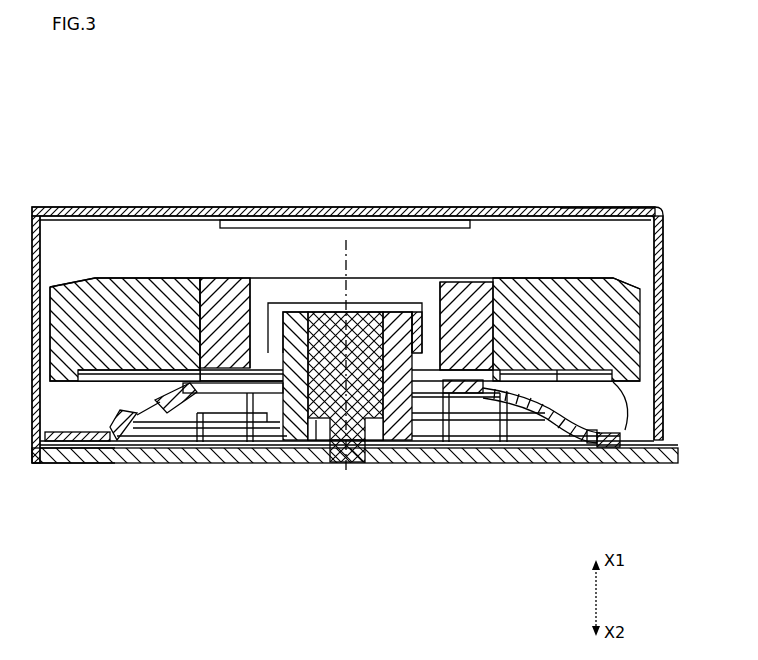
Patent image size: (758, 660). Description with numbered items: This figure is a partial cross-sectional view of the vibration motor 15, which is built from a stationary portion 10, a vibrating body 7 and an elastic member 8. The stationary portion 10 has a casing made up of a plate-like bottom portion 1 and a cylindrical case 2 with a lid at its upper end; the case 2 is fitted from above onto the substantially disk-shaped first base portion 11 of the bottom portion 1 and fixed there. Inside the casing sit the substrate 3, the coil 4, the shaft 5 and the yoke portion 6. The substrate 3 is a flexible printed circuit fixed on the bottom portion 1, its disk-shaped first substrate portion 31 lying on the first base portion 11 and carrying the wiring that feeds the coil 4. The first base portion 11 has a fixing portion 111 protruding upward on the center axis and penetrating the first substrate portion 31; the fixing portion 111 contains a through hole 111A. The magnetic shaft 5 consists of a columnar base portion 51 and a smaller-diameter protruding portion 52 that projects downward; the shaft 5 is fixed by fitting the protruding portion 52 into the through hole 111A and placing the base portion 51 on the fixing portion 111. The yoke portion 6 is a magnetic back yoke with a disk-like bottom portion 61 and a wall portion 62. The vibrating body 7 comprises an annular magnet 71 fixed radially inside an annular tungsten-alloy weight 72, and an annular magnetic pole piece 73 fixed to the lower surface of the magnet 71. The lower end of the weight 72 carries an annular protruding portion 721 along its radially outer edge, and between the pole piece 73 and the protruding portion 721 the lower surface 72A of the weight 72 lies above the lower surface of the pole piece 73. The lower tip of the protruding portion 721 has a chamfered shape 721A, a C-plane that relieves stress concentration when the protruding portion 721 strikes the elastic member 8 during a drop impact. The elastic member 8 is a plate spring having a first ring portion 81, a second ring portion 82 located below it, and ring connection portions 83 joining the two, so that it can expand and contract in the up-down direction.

The bottom portion 1 is at (655, 464).
The case 2 is at (31, 207).
The substrate 3 is at (188, 445).
The coil 4 is at (423, 441).
The shaft 5 is at (293, 311).
The yoke portion 6 is at (268, 312).
The vibrating body 7 is at (583, 263).
The elastic member 8 is at (490, 430).
The stationary portion 10 is at (61, 481).
The first base portion 11 is at (78, 463).
The vibration motor 15 is at (557, 124).
The first substrate portion 31 is at (240, 457).
The base portion 51 is at (383, 316).
The protruding portion 52 is at (350, 458).
The bottom portion 61 is at (412, 332).
The wall portion 62 is at (445, 312).
The magnet 71 is at (479, 447).
The weight 72 is at (548, 420).
The pole piece 73 is at (524, 437).
The first ring portion 81 is at (185, 413).
The second ring portion 82 is at (65, 462).
The ring connection portions 83 is at (127, 447).
The fixing portion 111 is at (313, 445).
The through hole 111A is at (382, 443).
The protruding portion 721 is at (600, 446).
The lower surface 72A is at (556, 385).
The chamfered shape 721A is at (564, 425).